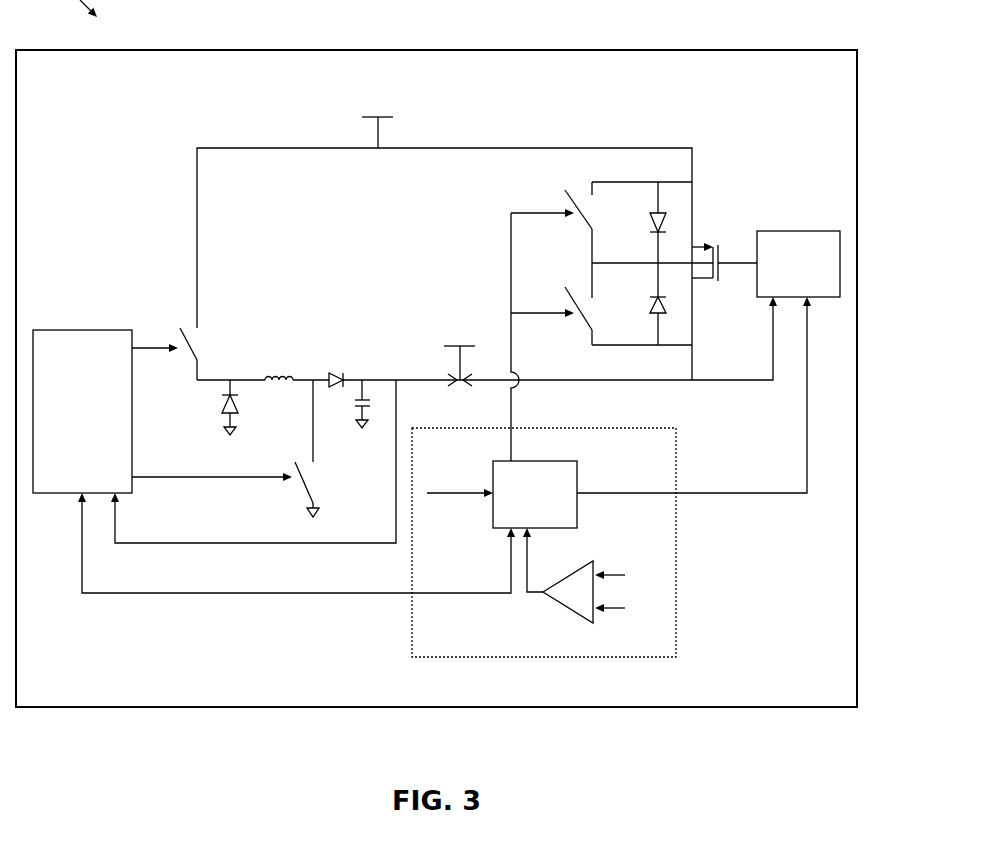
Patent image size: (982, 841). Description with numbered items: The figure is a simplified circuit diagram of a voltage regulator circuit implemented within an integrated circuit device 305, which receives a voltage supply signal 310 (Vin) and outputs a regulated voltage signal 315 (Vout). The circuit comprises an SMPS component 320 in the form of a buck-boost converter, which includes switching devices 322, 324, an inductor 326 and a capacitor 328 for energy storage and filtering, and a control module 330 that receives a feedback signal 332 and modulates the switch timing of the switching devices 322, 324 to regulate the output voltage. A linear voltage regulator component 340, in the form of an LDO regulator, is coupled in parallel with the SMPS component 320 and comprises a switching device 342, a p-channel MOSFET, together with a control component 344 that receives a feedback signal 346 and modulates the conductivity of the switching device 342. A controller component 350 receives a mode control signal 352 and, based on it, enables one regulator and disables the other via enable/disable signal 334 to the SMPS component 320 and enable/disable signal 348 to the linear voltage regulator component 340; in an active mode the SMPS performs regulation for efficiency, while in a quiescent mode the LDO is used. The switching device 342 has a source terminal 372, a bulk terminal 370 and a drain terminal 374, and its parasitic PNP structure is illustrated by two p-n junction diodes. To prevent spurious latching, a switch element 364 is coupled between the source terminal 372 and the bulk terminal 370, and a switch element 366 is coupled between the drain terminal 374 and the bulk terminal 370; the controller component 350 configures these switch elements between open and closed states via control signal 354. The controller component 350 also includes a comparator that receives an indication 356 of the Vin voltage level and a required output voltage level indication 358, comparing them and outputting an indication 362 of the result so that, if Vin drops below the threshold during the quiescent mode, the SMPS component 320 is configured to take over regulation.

The integrated circuit device 305 is at (64, 84).
The voltage supply signal 310 is at (360, 101).
The regulated voltage signal 315 is at (462, 318).
The SMPS component 320 is at (78, 238).
The switching device 322 is at (199, 344).
The switching device 324 is at (315, 478).
The inductor 326 is at (284, 373).
The capacitor 328 is at (345, 410).
The control module 330 is at (65, 330).
The feedback signal 332 is at (230, 541).
The enable/disable signal 334 is at (130, 596).
The linear voltage regulator component 340 is at (777, 137).
The switching device 342 is at (723, 232).
The control component 344 is at (807, 231).
The feedback signal 346 is at (742, 410).
The enable/disable signal 348 is at (775, 496).
The controller component 350 is at (676, 605).
The mode control signal 352 is at (462, 495).
The control signal 354 is at (510, 250).
The indication of a voltage level of the voltage supply signal 356 is at (607, 573).
The required/intended output voltage level indication 358 is at (605, 611).
The p-n junction diode / indication of comparison result 362 is at (651, 310).
The switch element 364 is at (577, 200).
The switch element 366 is at (577, 300).
The bulk terminal 370 is at (643, 262).
The source terminal 372 is at (693, 213).
The drain terminal 374 is at (692, 313).